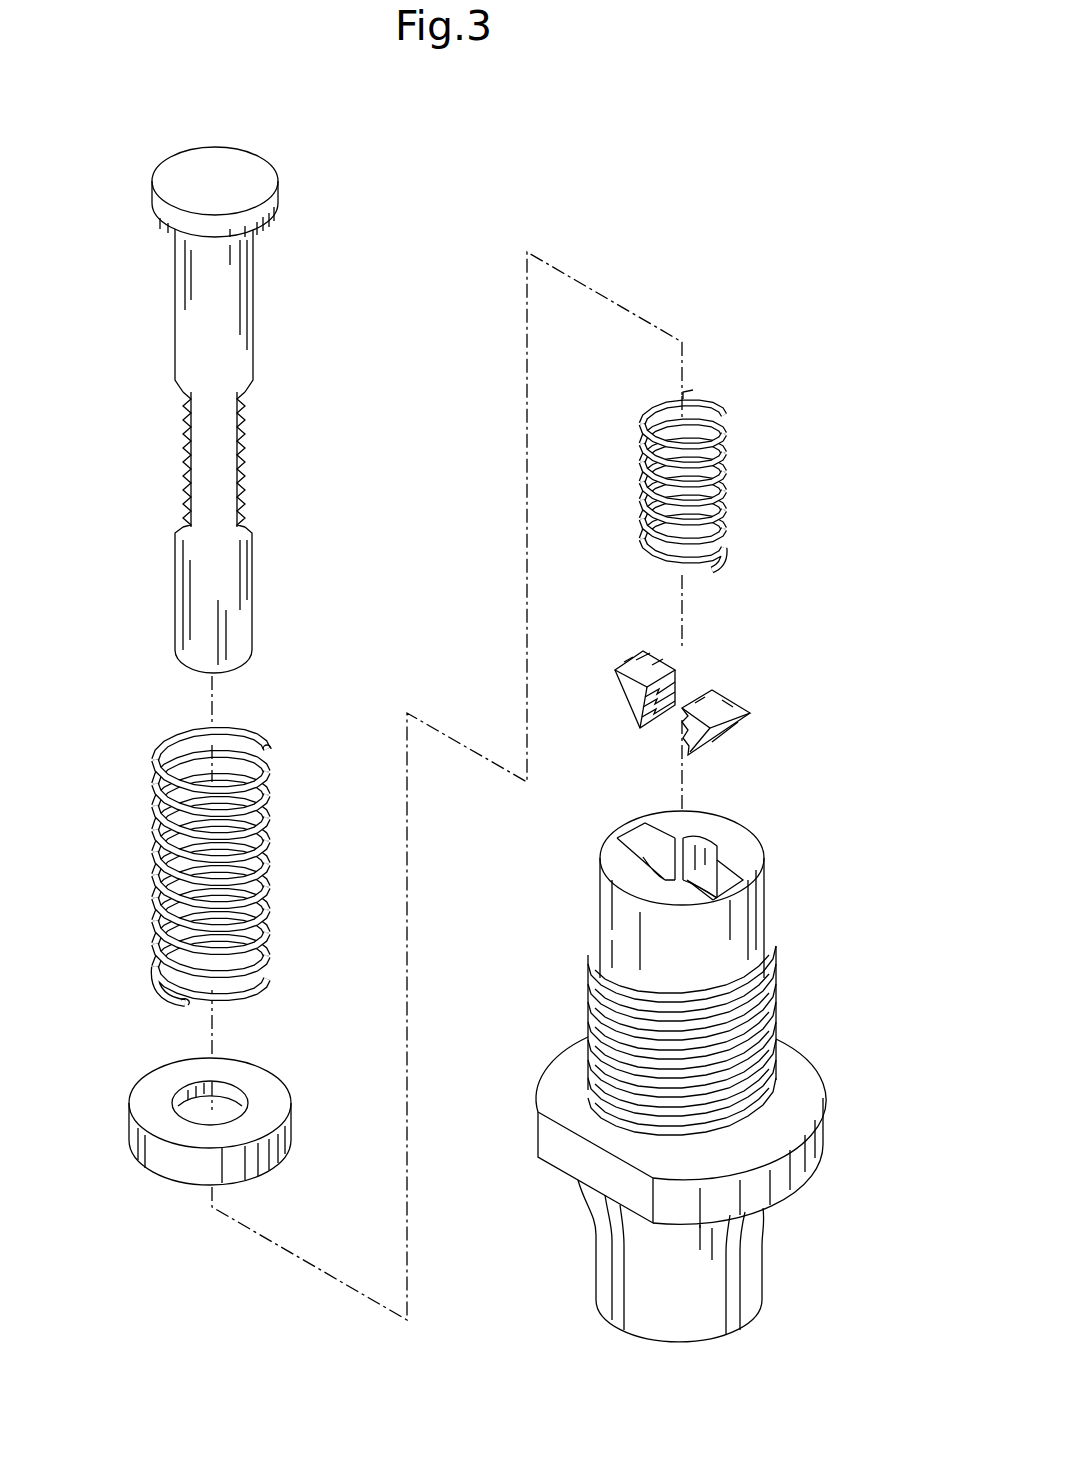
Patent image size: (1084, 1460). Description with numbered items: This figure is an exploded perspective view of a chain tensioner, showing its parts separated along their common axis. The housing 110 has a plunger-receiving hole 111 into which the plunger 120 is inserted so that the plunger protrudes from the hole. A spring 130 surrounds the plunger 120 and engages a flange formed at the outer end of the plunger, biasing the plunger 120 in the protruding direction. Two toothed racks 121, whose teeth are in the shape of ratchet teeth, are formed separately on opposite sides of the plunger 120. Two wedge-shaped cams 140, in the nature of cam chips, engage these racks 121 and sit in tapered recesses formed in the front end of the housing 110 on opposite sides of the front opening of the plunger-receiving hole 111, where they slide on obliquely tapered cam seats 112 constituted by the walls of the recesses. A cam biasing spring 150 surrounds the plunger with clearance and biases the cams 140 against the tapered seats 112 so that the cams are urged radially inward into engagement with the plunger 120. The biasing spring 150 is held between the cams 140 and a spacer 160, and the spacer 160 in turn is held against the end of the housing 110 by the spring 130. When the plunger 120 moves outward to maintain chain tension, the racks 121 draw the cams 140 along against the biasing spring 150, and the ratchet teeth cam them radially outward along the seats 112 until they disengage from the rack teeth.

The housing 110 is at (709, 1060).
The plunger-receiving hole 111 is at (710, 855).
The cam seat 112 is at (633, 835).
The plunger 120 is at (244, 410).
The rack 121 is at (183, 453).
The spring 130 is at (293, 767).
The wedge-shaped cam 140 is at (627, 644).
The cam biasing spring 150 is at (757, 453).
The spacer 160 is at (285, 1055).